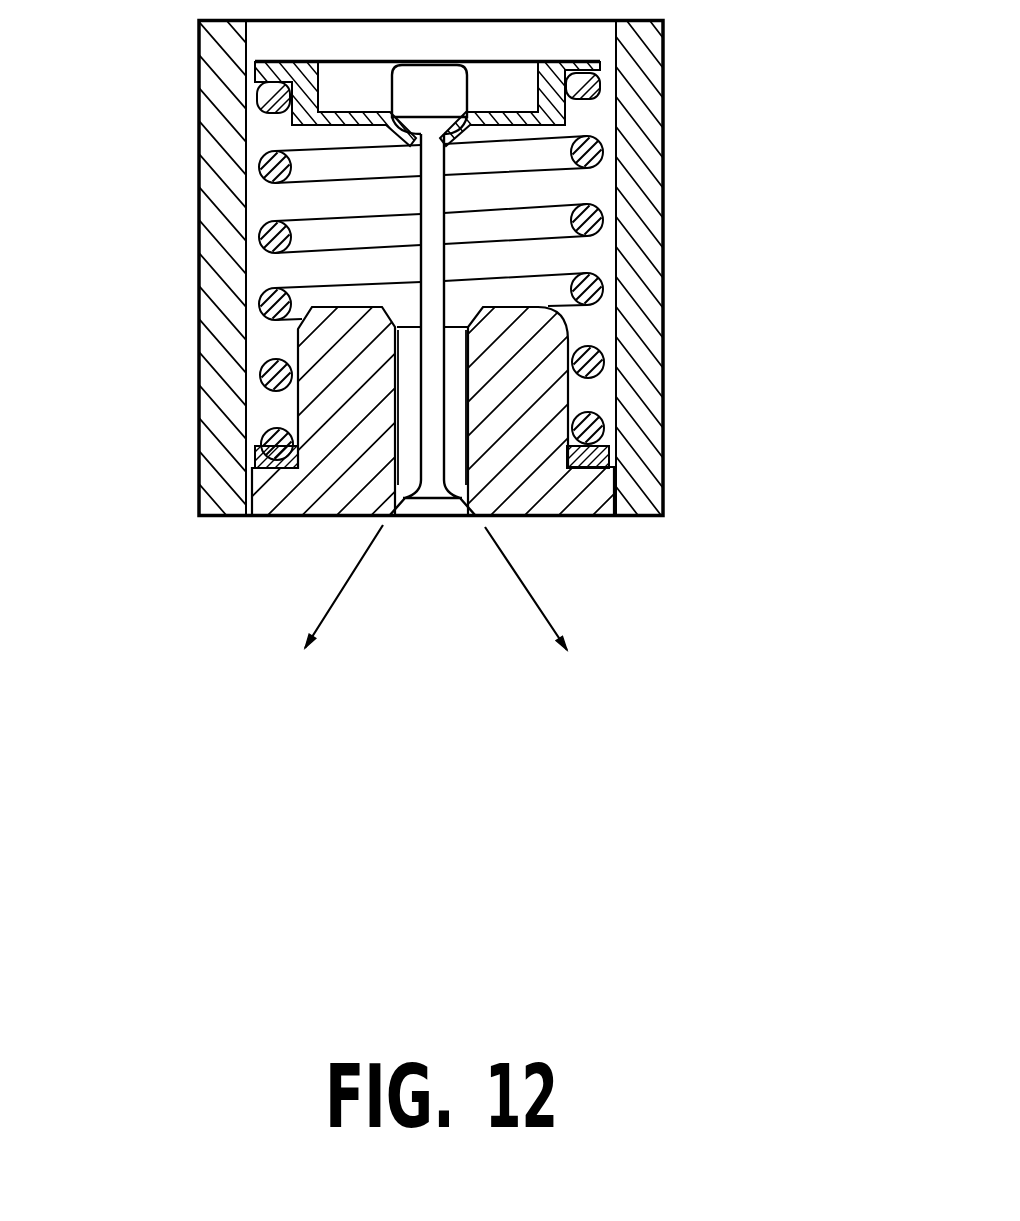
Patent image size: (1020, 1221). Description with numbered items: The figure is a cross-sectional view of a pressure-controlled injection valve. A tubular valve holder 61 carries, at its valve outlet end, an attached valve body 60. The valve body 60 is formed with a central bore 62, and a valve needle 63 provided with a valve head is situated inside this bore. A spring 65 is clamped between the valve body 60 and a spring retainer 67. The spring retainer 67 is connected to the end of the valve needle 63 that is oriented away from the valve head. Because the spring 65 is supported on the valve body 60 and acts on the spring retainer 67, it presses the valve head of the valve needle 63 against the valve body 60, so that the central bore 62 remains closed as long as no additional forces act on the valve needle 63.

The valve body 60 is at (563, 517).
The tubular valve holder 61 is at (637, 253).
The central bore 62 is at (405, 404).
The valve needle 63 is at (435, 516).
The spring 65 is at (260, 232).
The spring retainer 67 is at (598, 76).